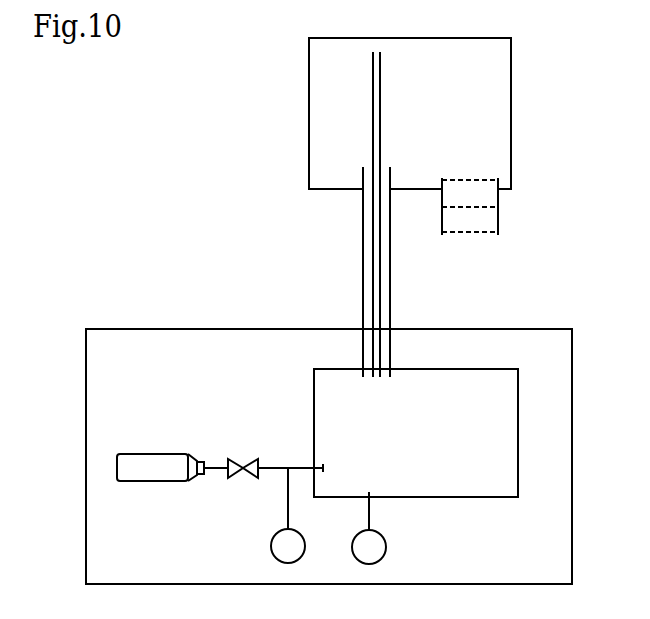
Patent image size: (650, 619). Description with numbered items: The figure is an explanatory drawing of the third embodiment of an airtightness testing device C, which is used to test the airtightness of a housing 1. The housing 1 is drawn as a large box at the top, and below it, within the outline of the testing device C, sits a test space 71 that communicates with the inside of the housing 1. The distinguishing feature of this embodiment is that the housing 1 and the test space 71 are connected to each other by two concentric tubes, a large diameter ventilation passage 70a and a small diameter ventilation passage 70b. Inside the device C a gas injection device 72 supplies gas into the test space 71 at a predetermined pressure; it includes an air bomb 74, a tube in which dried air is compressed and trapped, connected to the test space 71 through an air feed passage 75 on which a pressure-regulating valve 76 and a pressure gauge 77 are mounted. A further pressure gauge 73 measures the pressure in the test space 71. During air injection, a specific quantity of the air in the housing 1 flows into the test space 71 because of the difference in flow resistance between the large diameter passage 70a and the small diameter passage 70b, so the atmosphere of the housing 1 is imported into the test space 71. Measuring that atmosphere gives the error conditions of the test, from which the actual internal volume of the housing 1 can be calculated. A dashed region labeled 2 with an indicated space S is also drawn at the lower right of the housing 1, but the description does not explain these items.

The housing 1 is at (313, 103).
The sample stage / electrode 2 is at (478, 207).
The sample S is at (442, 222).
The airtightness testing device C is at (192, 328).
The large diameter ventilation passage 70a is at (391, 288).
The small diameter ventilation passage 70b is at (373, 239).
The test space 71 is at (470, 380).
The gas injection device 72 is at (235, 439).
The pressure gauge 73 is at (386, 549).
The air bomb 74 is at (145, 481).
The air feed passage 75 is at (277, 466).
The pressure-regulating valve 76 is at (233, 478).
The pressure gauge 77 is at (271, 546).